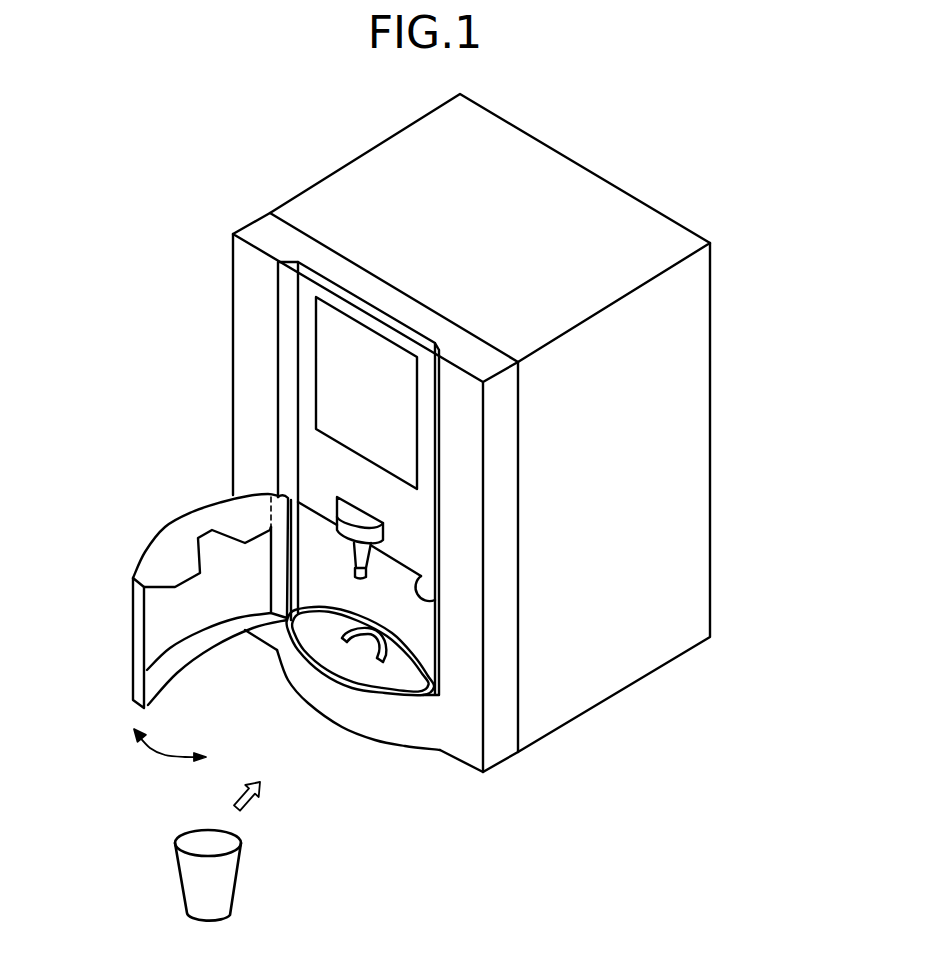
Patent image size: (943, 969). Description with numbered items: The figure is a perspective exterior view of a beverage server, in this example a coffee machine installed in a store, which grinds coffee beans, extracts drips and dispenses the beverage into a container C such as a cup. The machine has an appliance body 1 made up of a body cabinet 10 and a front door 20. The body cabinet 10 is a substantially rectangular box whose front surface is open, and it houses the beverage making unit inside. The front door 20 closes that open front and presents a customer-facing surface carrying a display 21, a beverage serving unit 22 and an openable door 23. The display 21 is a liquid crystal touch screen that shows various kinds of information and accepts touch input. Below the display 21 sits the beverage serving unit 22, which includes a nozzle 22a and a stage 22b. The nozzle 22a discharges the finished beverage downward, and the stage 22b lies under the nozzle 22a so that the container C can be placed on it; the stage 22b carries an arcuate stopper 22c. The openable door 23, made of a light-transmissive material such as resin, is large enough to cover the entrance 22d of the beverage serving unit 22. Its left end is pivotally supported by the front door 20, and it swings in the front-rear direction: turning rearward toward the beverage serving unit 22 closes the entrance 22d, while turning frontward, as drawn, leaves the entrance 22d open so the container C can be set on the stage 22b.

The appliance body 1 is at (715, 75).
The body cabinet 10 is at (633, 232).
The front door 20 is at (378, 293).
The display 21 is at (350, 377).
The beverage serving unit 22 is at (414, 611).
The nozzle 22a is at (356, 571).
The stage 22b is at (393, 676).
The arcuate stopper 22c is at (372, 663).
The entrance 22d is at (435, 600).
The openable door 23 is at (133, 640).
The container C is at (238, 877).